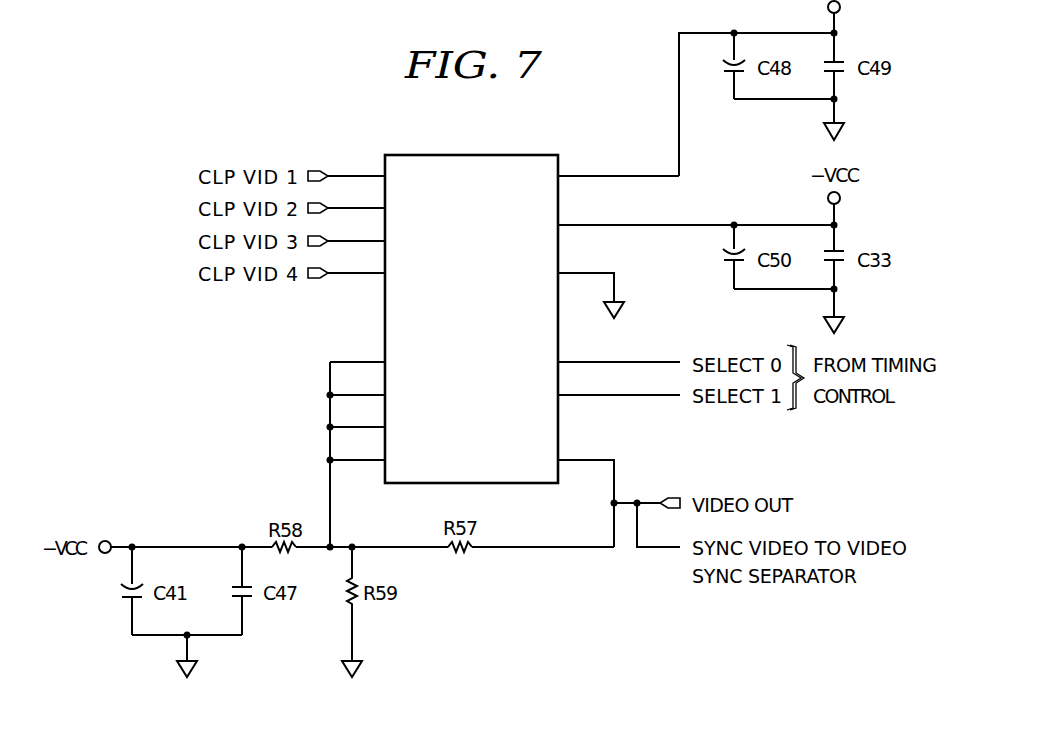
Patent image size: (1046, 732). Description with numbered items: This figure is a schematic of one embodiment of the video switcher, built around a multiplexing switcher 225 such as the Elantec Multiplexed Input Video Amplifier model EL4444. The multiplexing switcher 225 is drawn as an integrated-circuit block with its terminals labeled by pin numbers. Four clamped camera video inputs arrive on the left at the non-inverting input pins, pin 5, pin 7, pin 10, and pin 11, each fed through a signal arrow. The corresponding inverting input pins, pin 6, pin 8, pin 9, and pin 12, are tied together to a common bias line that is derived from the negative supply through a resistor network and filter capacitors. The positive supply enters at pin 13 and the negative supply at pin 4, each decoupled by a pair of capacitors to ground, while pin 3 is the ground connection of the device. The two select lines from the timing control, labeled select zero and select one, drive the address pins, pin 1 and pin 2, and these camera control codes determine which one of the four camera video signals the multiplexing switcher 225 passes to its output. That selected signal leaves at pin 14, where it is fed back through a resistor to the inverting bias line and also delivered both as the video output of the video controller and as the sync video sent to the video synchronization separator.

The multiplexing switcher 225 is at (470, 155).
The pin 5, +IN1 input 5 is at (374, 170).
The pin 7, +IN2 input 7 is at (374, 202).
The pin 10, +IN3 input 10 is at (374, 235).
The pin 11, +IN4 input 11 is at (374, 267).
The pin 6, -IN1 input 6 is at (386, 356).
The pin 8, -IN2 input 8 is at (386, 389).
The pin 9, -IN3 input 9 is at (386, 421).
The pin 12, -IN4 input 12 is at (386, 454).
The pin 13, +V supply 13 is at (603, 170).
The pin 4, -V supply 4 is at (630, 219).
The pin 3, GND 3 is at (568, 284).
The pin 1, A1 select input 1 is at (605, 356).
The pin 2, A0 select input 2 is at (604, 389).
The pin 14, VOUT output 14 is at (558, 492).